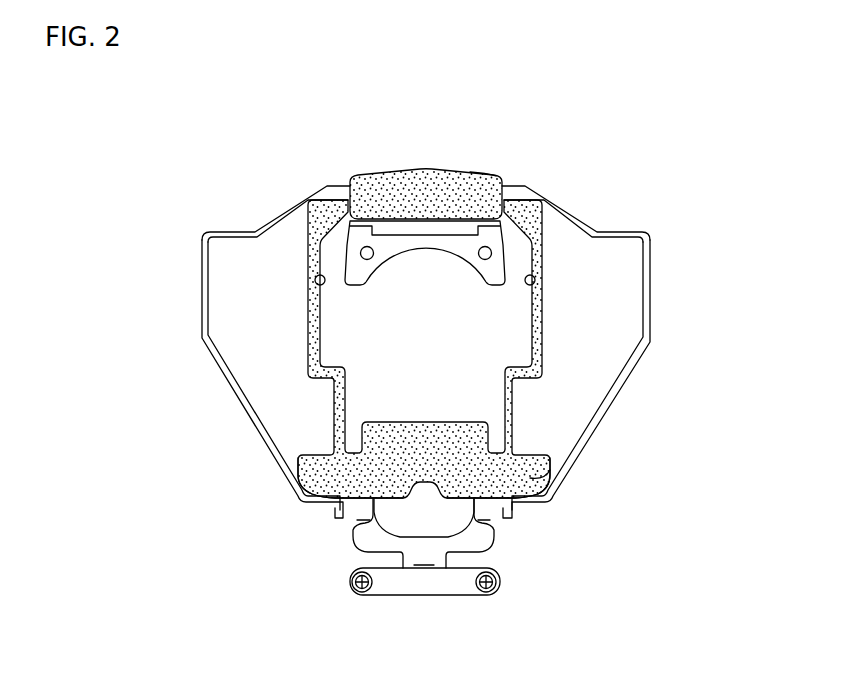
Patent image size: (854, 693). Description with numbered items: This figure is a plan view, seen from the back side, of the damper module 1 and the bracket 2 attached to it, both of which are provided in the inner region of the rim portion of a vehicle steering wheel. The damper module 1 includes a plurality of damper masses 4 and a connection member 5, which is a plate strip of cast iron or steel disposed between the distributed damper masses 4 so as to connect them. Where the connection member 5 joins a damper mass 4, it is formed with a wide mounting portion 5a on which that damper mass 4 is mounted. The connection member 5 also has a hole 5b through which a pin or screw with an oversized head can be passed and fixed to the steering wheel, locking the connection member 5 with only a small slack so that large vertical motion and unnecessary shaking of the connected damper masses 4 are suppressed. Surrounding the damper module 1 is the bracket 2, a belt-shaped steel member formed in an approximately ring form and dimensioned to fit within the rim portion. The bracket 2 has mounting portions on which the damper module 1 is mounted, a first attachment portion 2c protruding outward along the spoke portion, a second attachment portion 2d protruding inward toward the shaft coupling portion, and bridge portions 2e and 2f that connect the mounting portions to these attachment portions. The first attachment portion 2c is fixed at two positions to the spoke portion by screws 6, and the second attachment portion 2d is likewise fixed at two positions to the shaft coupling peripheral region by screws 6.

The damper module 1 is at (411, 308).
The bracket 2 is at (669, 233).
The first attachment portion 2c is at (428, 591).
The second attachment portion 2d is at (398, 249).
The bridge portion 2e is at (650, 305).
The bridge portion 2f is at (215, 363).
The damper mass 4 is at (432, 175).
The connection member 5 is at (556, 331).
The mounting portion 5a is at (482, 182).
The hole 5b is at (324, 285).
The screw 6 is at (491, 597).